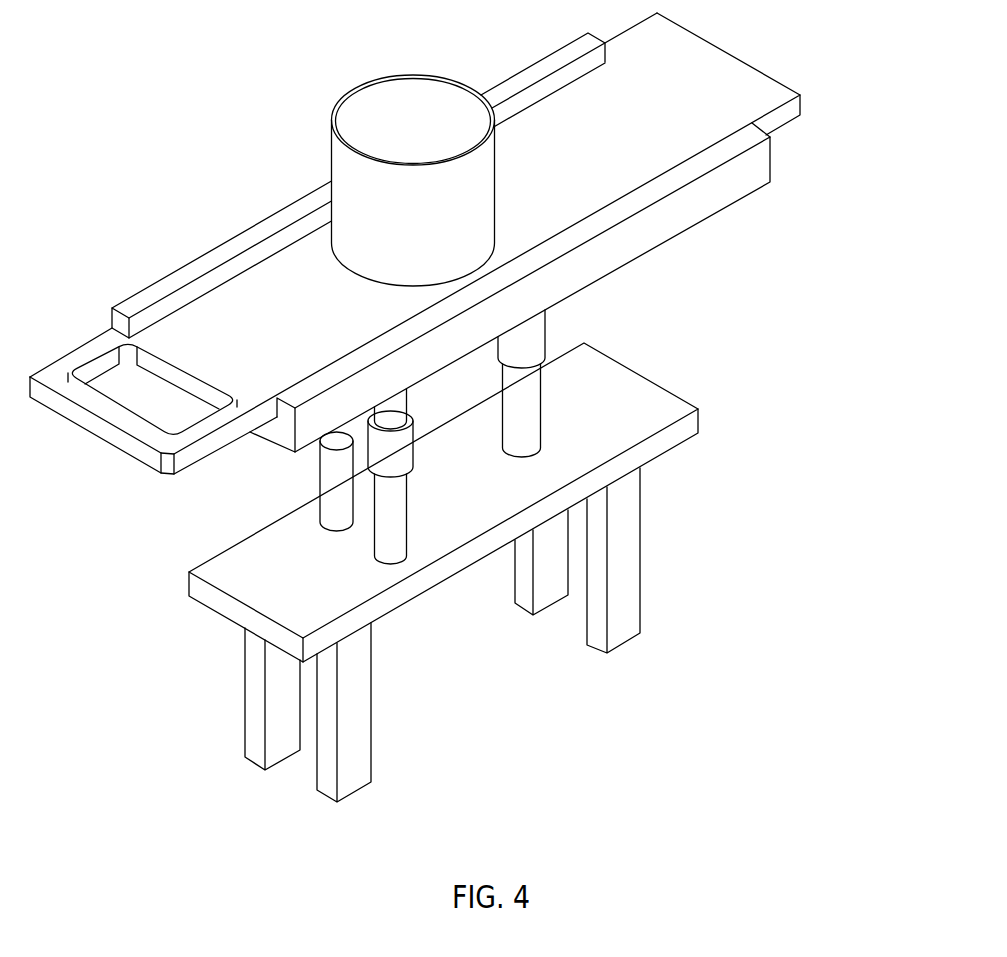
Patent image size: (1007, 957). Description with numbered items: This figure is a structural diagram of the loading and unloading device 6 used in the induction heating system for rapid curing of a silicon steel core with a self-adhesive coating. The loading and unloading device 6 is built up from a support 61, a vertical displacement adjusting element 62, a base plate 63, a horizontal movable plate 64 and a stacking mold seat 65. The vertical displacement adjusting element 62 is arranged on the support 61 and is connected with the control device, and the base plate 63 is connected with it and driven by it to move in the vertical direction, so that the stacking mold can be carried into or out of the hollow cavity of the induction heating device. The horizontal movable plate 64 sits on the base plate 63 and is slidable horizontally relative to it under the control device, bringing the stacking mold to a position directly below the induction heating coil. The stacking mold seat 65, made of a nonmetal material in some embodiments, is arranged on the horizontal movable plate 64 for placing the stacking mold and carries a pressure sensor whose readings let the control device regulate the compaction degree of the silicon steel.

The loading and unloading device 6 is at (489, 41).
The support 61 is at (622, 492).
The vertical displacement adjusting element 62 is at (510, 352).
The base plate 63 is at (605, 243).
The horizontal movable plate 64 is at (728, 95).
The stacking mold seat 65 is at (410, 212).